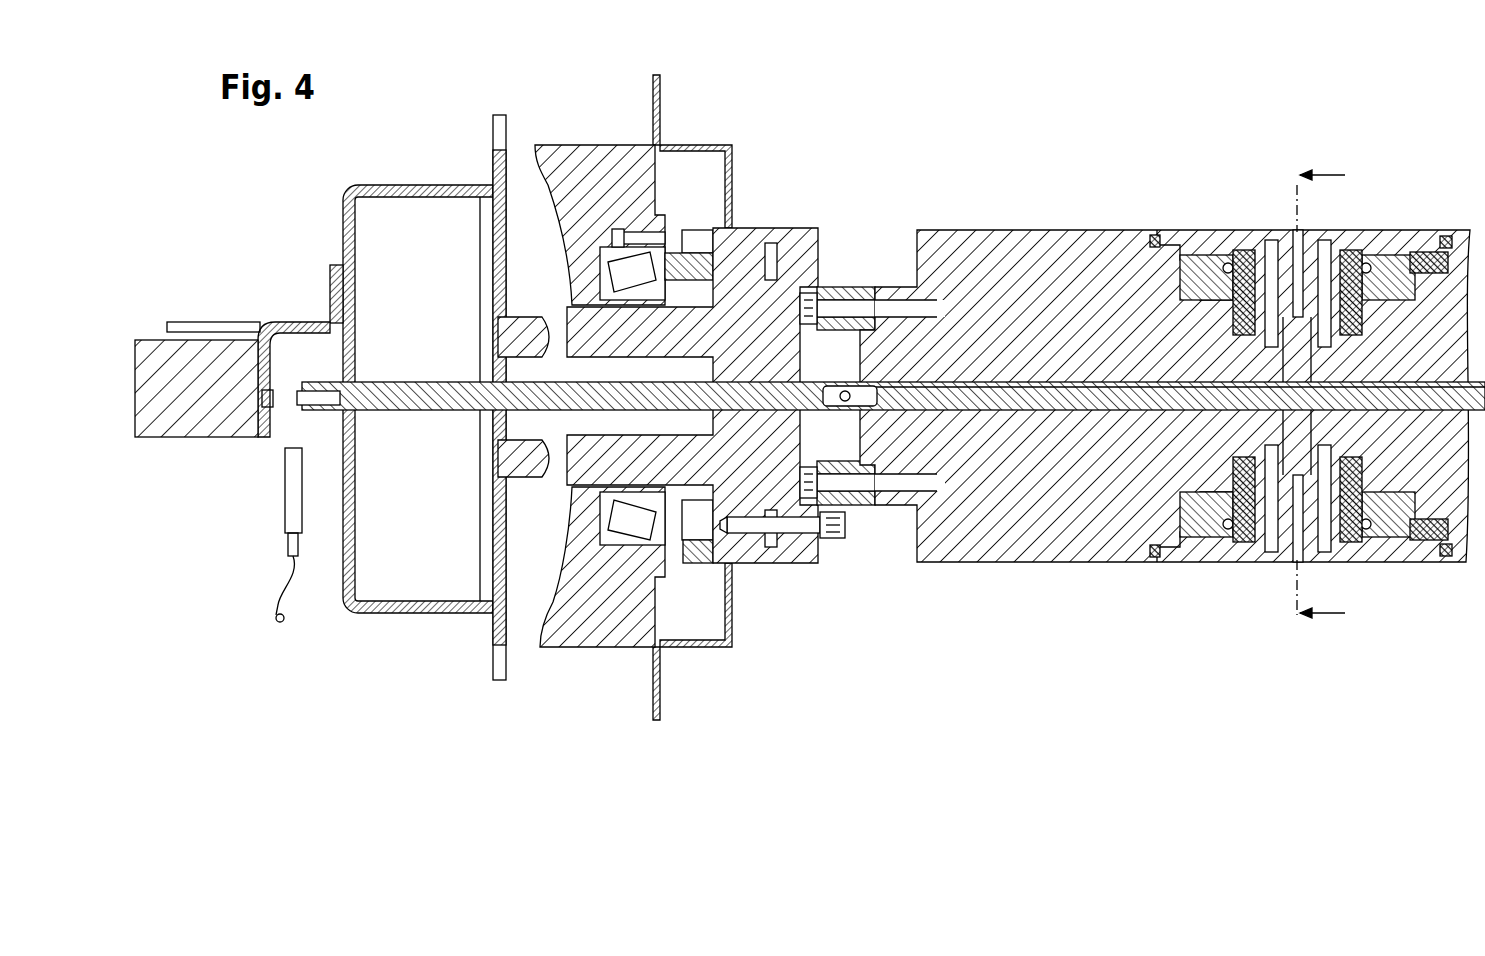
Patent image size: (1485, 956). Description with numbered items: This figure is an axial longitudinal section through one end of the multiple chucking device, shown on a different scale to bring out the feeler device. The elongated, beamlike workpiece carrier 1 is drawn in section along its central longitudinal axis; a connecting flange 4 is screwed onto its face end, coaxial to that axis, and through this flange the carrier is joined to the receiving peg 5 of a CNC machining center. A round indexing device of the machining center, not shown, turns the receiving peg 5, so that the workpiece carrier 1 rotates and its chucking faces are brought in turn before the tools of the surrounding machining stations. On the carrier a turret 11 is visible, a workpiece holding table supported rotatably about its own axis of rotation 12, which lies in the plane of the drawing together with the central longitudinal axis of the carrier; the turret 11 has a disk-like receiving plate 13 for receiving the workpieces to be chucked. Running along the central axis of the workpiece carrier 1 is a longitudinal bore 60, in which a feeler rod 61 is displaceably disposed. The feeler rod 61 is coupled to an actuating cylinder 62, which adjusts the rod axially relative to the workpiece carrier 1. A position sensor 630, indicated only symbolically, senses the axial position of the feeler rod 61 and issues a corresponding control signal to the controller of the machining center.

The workpiece carrier 1 is at (981, 240).
The connecting flange 4 is at (795, 228).
The receiving peg 5 is at (532, 470).
The turret 11 is at (1347, 198).
The axis of rotation 12 is at (1297, 604).
The receiving plate 13 is at (1410, 252).
The longitudinal bore 60 is at (996, 385).
The feeler rod 61 is at (1055, 392).
The actuating cylinder 62 is at (188, 418).
The position sensor 630 is at (290, 519).